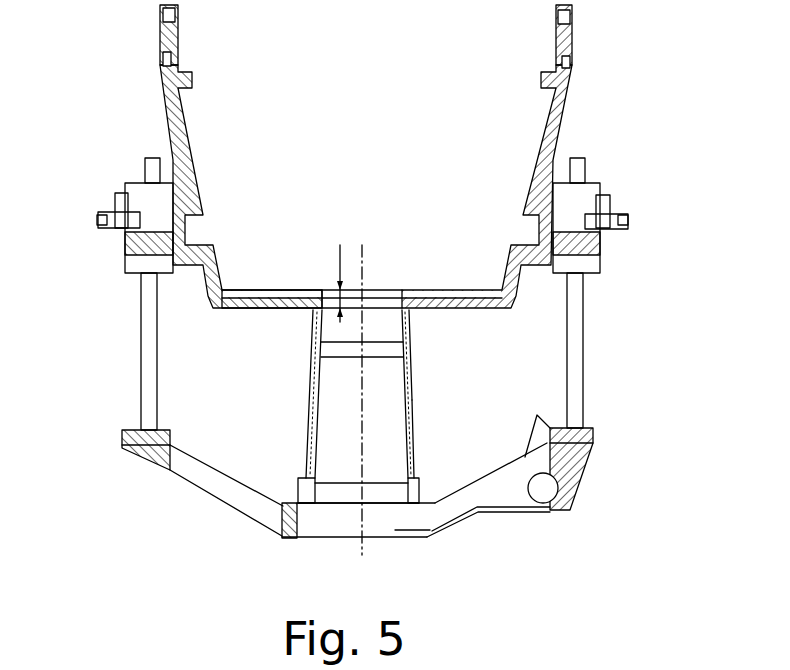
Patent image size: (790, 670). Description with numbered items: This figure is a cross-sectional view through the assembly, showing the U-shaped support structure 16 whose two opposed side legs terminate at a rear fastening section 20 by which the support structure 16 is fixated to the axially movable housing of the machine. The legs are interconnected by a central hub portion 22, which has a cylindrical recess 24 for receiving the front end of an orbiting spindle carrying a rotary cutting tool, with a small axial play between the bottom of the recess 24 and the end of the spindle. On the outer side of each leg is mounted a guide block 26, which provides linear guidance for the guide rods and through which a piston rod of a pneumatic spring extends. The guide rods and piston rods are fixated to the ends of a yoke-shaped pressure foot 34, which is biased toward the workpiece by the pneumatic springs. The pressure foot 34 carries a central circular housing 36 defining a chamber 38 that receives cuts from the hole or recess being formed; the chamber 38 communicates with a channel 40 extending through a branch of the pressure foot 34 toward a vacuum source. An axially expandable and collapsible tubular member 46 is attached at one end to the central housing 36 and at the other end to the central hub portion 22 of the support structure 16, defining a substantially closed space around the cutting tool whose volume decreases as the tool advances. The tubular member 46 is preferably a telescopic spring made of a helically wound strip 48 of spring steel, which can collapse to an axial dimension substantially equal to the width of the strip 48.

The support structure 16 is at (577, 122).
The rear fastening section 20 is at (160, 40).
The central hub portion 22 is at (258, 307).
The cylindrical recess 24 is at (418, 292).
The guide block 26 is at (124, 252).
The pressure foot 34 is at (233, 503).
The central circular housing 36 is at (283, 540).
The chamber 38 is at (370, 525).
The channel 40 is at (480, 493).
The tubular member 46 is at (417, 408).
The helically wound strip 48 is at (407, 362).